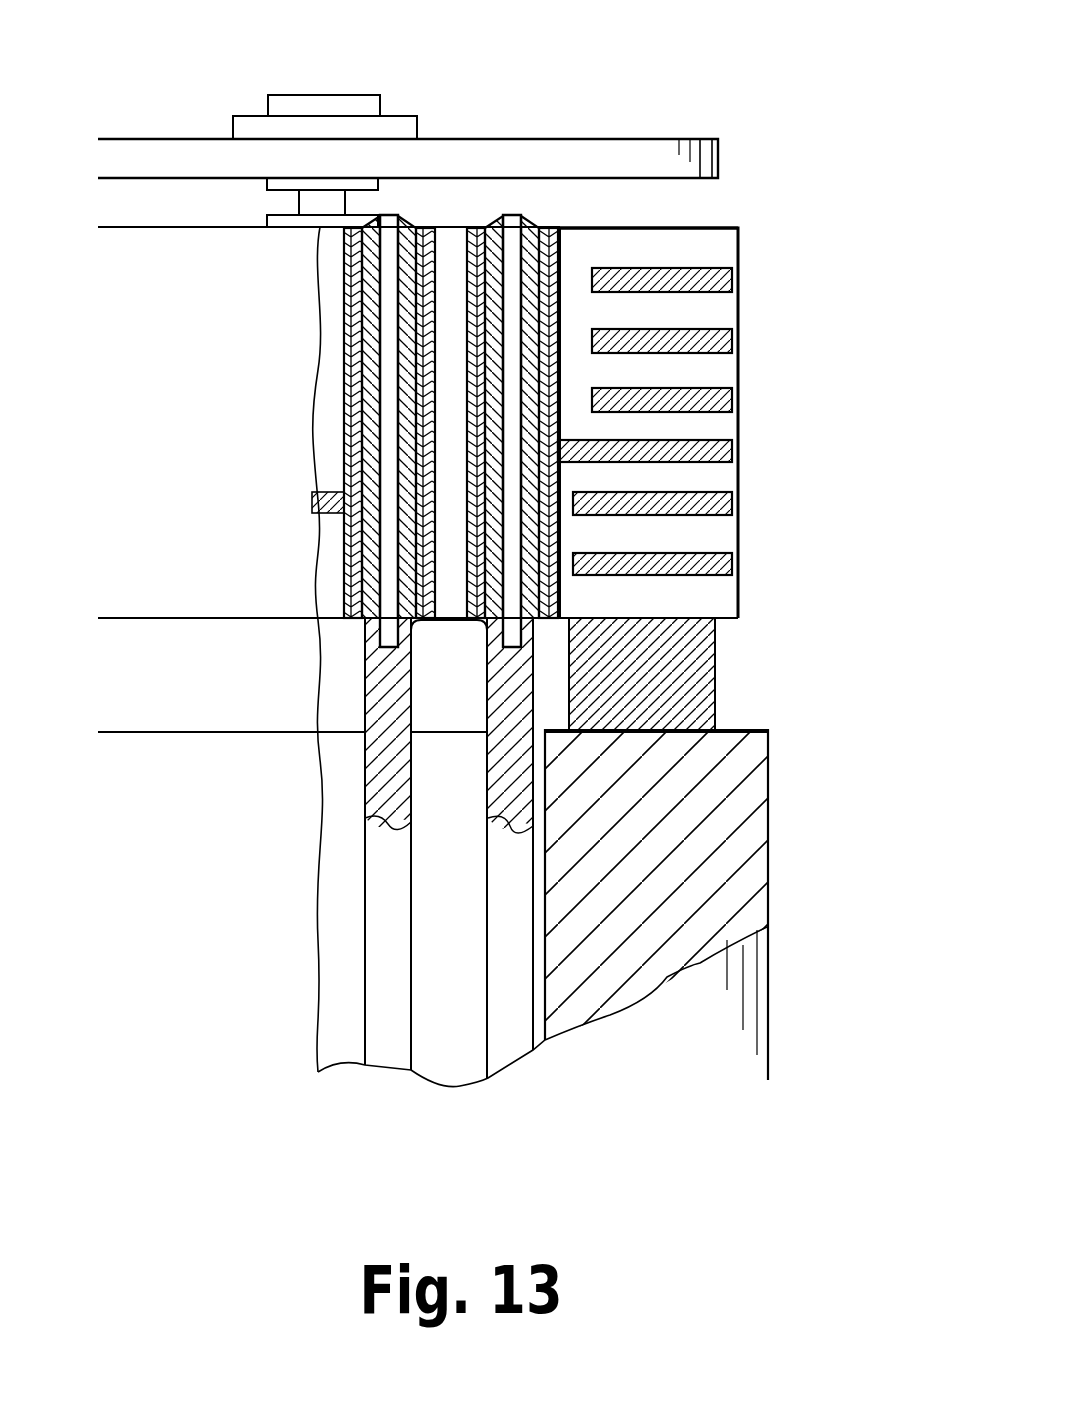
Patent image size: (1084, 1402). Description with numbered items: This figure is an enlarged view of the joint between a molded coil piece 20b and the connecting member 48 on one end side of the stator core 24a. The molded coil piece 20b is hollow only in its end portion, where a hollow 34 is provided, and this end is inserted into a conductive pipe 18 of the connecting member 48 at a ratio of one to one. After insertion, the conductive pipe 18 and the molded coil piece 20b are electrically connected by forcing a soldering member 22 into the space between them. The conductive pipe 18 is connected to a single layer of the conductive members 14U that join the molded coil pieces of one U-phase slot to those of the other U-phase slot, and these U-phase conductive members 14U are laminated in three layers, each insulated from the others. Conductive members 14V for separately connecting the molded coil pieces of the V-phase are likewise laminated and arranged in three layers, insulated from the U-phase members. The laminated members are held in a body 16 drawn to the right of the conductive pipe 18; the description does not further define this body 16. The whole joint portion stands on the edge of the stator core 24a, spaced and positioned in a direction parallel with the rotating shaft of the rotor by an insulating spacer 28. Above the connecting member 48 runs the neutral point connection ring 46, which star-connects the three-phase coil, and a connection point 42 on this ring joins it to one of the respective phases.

The connection point 42 is at (330, 95).
The connecting member 48 is at (227, 343).
The hollow 34 is at (393, 220).
The molded coil piece 20b is at (528, 216).
The neutral point connection ring 46 is at (612, 150).
The conductive pipe 18 is at (570, 227).
The conductive member 14V is at (738, 292).
The housing 16 is at (723, 427).
The conductive member 14U is at (738, 462).
The soldering member 22 is at (359, 622).
The insulating spacer 28 is at (647, 672).
The stator core 24a is at (675, 837).